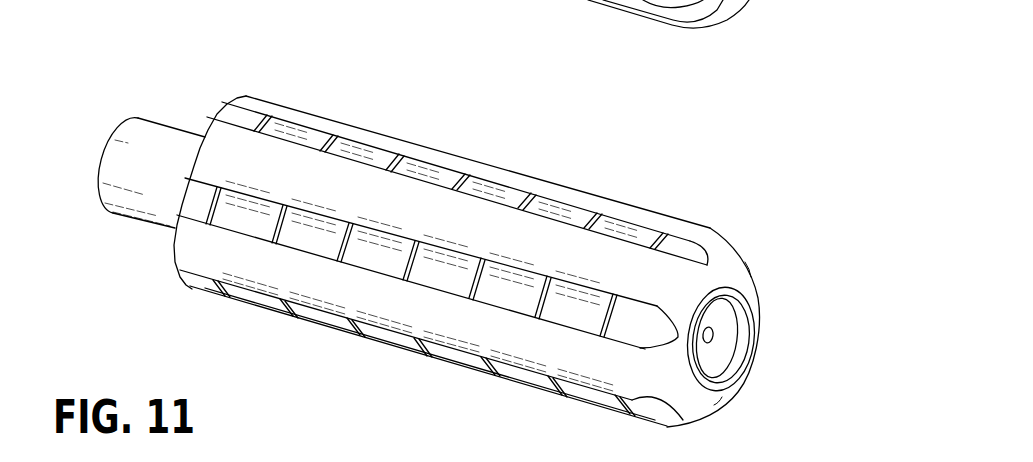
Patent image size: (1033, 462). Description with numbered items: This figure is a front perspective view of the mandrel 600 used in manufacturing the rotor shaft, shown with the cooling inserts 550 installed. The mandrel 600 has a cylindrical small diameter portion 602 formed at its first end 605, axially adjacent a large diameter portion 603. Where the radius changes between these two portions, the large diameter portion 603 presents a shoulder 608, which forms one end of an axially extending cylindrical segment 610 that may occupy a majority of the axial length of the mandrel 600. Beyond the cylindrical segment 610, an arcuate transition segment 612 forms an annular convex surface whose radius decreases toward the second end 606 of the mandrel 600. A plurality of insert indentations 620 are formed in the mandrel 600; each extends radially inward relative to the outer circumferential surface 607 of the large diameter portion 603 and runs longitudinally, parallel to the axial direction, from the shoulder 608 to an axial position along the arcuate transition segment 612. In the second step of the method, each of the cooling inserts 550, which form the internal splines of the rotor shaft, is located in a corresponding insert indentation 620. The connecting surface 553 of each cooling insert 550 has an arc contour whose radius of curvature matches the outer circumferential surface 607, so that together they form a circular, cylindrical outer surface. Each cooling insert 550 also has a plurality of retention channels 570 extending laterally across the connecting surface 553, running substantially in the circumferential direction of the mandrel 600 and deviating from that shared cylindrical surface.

The mandrel 600 is at (730, 192).
The large diameter portion 603 is at (266, 84).
The first end 605 is at (99, 160).
The small diameter portion 602 is at (91, 221).
The shoulder 608 is at (178, 295).
The outer circumferential surface 607 is at (323, 173).
The connecting surface 553 is at (363, 157).
The cylindrical segment 610 is at (509, 173).
The insert indentations 620 is at (593, 232).
The cooling inserts 550 is at (647, 330).
The arcuate transition segment 612 is at (757, 249).
The second end 606 is at (735, 365).
The retention channels 570 is at (465, 283).